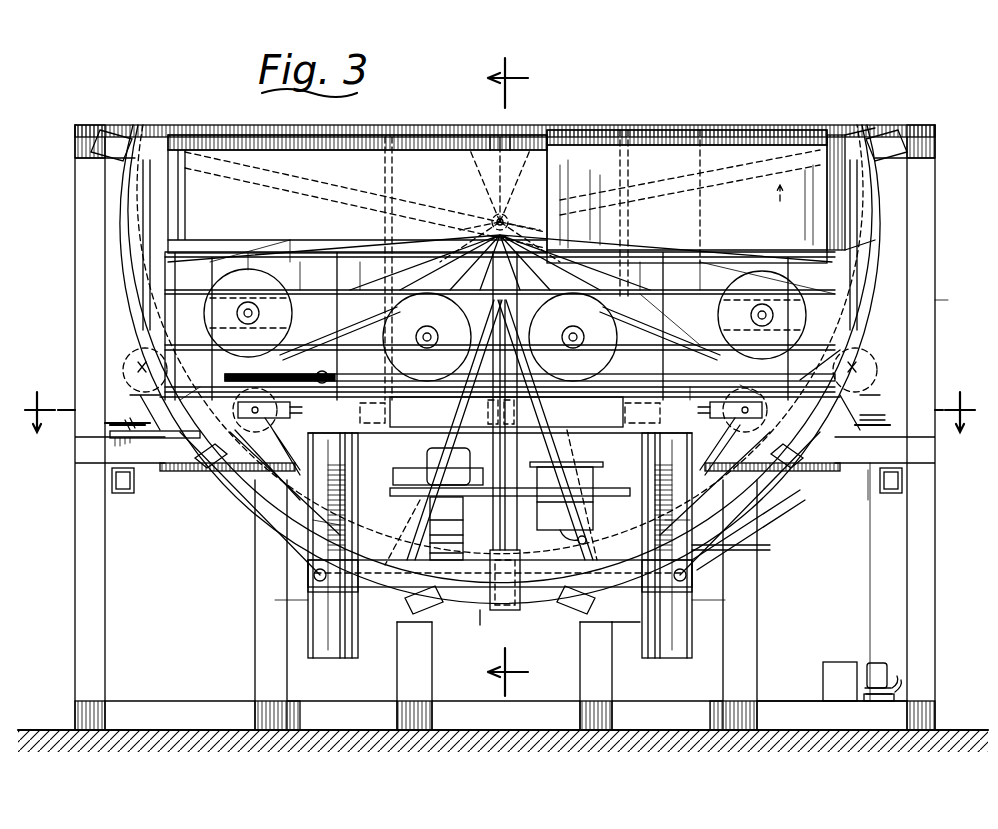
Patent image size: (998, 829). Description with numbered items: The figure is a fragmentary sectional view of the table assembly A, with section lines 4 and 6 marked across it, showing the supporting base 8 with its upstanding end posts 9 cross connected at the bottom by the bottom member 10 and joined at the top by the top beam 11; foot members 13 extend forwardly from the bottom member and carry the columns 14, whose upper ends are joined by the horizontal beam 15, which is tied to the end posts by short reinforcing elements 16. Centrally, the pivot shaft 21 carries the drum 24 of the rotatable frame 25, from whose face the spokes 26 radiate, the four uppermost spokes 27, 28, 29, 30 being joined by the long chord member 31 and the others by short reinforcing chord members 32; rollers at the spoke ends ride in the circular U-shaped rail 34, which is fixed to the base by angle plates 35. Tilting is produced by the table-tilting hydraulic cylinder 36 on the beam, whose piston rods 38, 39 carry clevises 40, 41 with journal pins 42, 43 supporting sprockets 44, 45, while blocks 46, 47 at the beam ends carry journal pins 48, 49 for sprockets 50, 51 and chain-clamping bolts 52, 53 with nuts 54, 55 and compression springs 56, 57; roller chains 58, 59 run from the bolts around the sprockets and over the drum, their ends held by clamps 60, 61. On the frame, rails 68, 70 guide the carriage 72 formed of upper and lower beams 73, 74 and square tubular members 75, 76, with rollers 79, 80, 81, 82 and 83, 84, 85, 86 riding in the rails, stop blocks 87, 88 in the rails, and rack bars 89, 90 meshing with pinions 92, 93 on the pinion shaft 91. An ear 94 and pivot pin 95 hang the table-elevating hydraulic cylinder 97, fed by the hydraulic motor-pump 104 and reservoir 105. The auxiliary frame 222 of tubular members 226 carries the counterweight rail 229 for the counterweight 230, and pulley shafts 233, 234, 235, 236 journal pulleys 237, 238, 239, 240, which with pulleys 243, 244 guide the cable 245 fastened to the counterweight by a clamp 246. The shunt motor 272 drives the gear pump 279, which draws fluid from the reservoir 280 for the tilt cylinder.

The table assembly A is at (813, 65).
The section line 4- 4 is at (495, 377).
The section line 6- 6 is at (497, 421).
The supporting base 8 is at (940, 323).
The end posts 9 is at (75, 245).
The bottom member 10 is at (767, 698).
The top beam 11 is at (886, 137).
The foot members 13 is at (105, 708).
The columns 14 is at (75, 621).
The horizontal beam 15 is at (860, 480).
The reinforcing elements 16 is at (122, 495).
The pivot shaft 21 is at (500, 206).
The drum 24 is at (635, 190).
The rotatable frame 25 is at (783, 206).
The spokes 26 is at (195, 268).
The spoke 27 is at (705, 195).
The spoke 28 is at (560, 171).
The spoke 29 is at (480, 180).
The spoke 30 is at (320, 174).
The chord member 31 is at (202, 134).
The reinforcing chord members 32 is at (860, 212).
The U-shaped rail 34 is at (780, 520).
The angle plates 35 is at (114, 134).
The table-tilting hydraulic cylinder 36 is at (480, 397).
The piston rod 38 is at (715, 445).
The piston rod 39 is at (310, 430).
The clevis 40 is at (745, 396).
The clevis 41 is at (290, 445).
The journal pin 42 is at (760, 425).
The journal pin 43 is at (235, 419).
The sprocket 44 is at (770, 401).
The sprocket 45 is at (238, 409).
The block 46 is at (863, 394).
The block 47 is at (145, 397).
The journal pin 48 is at (875, 374).
The journal pin 49 is at (138, 368).
The sprocket 50 is at (865, 363).
The sprocket 51 is at (140, 358).
The chain-clamping bolt 52 is at (865, 435).
The chain-clamping bolt 53 is at (129, 438).
The nut 54 is at (880, 418).
The nut 55 is at (110, 427).
The compression spring 56 is at (870, 485).
The compression spring 57 is at (130, 420).
The roller chain 58 is at (692, 370).
The roller chain 59 is at (311, 364).
The clamp 60 is at (625, 134).
The clamp 61 is at (386, 137).
The U-shaped rail 68 is at (705, 642).
The U-shaped rail 70 is at (332, 638).
The carriage 72 is at (479, 612).
The upper beam 73 is at (500, 415).
The lower beam 74 is at (500, 580).
The square tubular member 75 is at (588, 507).
The square tubular member 76 is at (380, 560).
The roller 79 is at (658, 545).
The roller 80 is at (655, 607).
The roller 81 is at (346, 545).
The roller 82 is at (345, 508).
The roller 83 is at (648, 545).
The roller 84 is at (692, 590).
The roller 85 is at (327, 367).
The roller 86 is at (308, 592).
The stop block 87 is at (308, 572).
The stop block 88 is at (500, 503).
The rack bar 89 is at (740, 548).
The rack bar 90 is at (330, 528).
The pinion shaft 91 is at (475, 498).
The pinion 92 is at (665, 512).
The pinion 93 is at (425, 510).
The ear 94 is at (515, 408).
The pivot pin 95 is at (514, 401).
The table-elevating hydraulic cylinder 97 is at (520, 530).
The hydraulic motor-pump 104 is at (425, 469).
The hydraulic fluid reservoir 105 is at (585, 471).
The auxiliary frame 222 is at (211, 265).
The tubular members 226 is at (350, 265).
The counterweight rail 229 is at (521, 137).
The counterweight 230 is at (690, 134).
The pulley shaft 233 is at (248, 313).
The pulley shaft 234 is at (388, 324).
The pulley shaft 235 is at (624, 337).
The pulley shaft 236 is at (762, 315).
The pulley 237 is at (246, 270).
The pulley 238 is at (397, 312).
The pulley 239 is at (630, 313).
The pulley 240 is at (780, 268).
The pulley 243 is at (826, 370).
The pulley 244 is at (216, 376).
The cable 245 is at (284, 265).
The clamp 246 is at (640, 260).
The shunt motor 272 is at (878, 663).
The gear pump 279 is at (880, 701).
The reservoir 280 is at (840, 662).